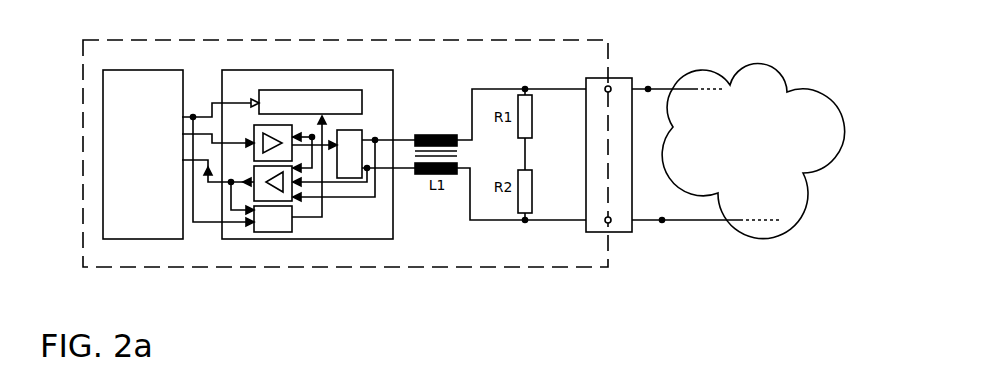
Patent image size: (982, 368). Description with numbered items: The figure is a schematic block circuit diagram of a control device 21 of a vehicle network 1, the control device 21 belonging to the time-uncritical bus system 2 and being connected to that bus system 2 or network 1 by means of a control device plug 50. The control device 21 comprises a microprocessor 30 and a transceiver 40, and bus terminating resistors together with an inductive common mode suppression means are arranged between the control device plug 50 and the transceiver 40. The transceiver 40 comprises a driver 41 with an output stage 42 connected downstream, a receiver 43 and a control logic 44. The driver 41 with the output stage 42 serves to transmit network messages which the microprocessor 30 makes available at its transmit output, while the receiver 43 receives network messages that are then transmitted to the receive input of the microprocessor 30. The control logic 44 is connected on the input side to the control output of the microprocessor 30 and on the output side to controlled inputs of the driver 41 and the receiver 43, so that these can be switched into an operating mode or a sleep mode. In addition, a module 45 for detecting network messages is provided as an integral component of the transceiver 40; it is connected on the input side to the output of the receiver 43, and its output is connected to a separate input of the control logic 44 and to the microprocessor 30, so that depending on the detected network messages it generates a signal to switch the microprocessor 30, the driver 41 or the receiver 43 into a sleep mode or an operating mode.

The vehicle network 1 is at (775, 86).
The bus system 2 is at (648, 89).
The control device 21 is at (532, 51).
The microprocessor 30 is at (151, 224).
The transceiver 40 is at (358, 76).
The driver 41 is at (280, 129).
The output stage 42 is at (348, 172).
The receiver 43 is at (275, 196).
The control logic 44 is at (316, 95).
The module for detecting network messages 45 is at (265, 223).
The control device plug 50 is at (623, 229).